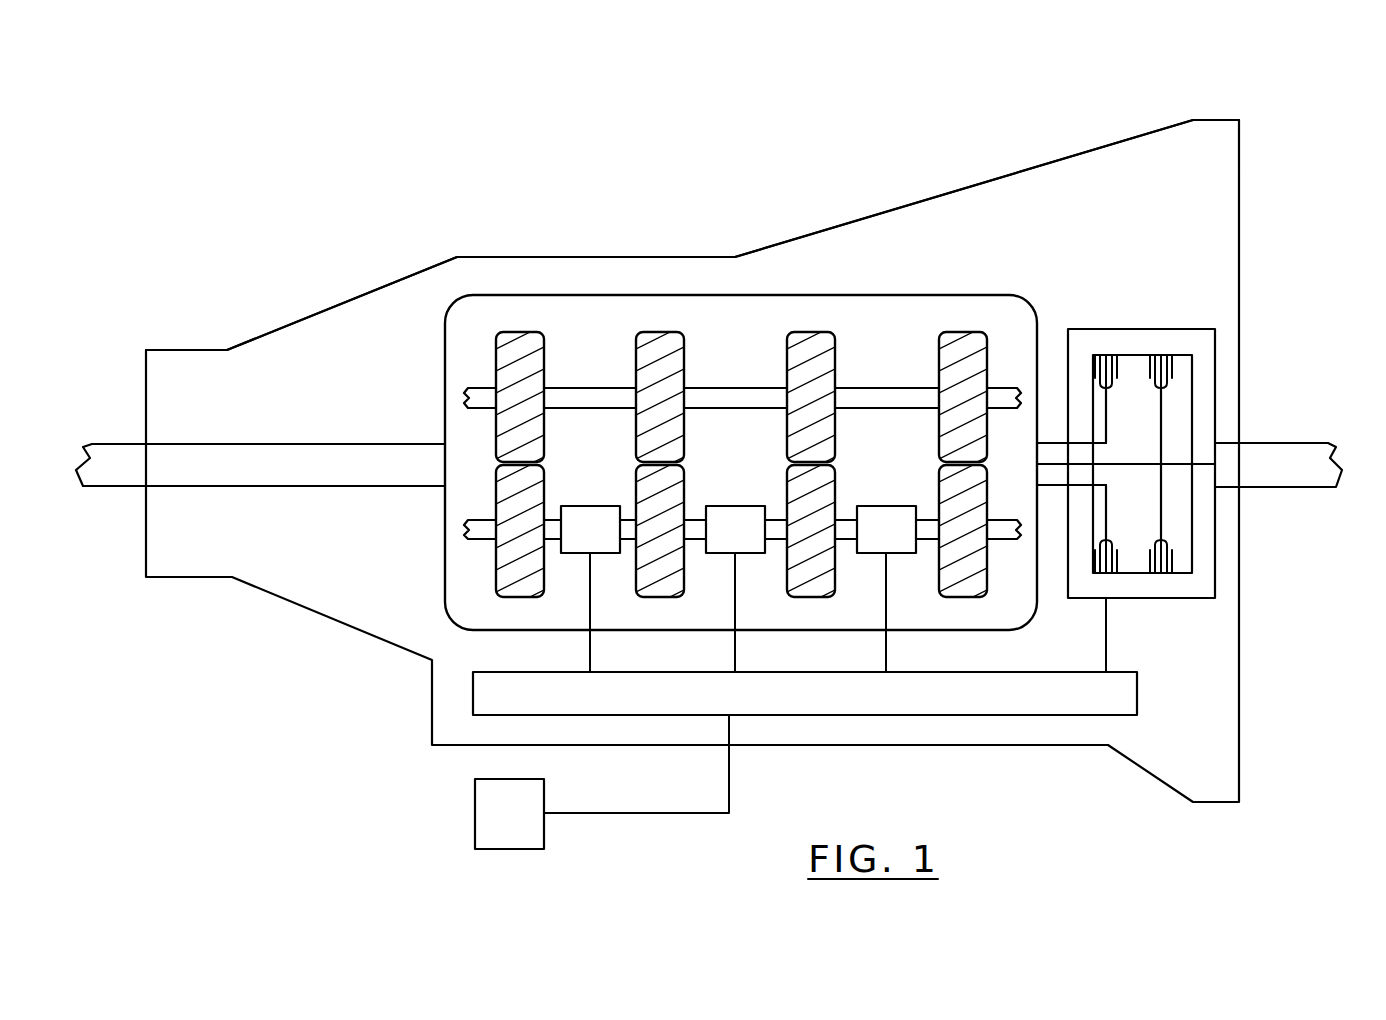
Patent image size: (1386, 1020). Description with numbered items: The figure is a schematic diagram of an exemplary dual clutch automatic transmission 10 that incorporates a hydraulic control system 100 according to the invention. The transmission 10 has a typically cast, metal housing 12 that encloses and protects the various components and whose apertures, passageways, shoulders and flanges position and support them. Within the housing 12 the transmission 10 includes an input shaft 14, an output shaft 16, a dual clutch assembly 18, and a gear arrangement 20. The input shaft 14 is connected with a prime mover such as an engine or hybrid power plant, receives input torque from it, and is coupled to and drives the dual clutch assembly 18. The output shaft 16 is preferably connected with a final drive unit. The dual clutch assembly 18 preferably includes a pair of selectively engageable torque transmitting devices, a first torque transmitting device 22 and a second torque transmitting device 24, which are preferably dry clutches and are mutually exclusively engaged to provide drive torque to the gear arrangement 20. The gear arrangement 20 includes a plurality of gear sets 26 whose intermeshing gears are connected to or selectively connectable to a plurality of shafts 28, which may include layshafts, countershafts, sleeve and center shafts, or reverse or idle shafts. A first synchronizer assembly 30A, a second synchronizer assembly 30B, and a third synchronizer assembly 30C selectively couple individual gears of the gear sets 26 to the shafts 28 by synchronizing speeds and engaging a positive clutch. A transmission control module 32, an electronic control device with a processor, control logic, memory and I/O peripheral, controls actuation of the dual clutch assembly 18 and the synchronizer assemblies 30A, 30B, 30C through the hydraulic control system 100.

The dual clutch automatic transmission 10 is at (1313, 112).
The housing 12 is at (527, 256).
The input shaft 14 is at (1293, 443).
The output shaft 16 is at (106, 443).
The dual clutch assembly 18 is at (1152, 329).
The gear arrangement 20 is at (497, 294).
The first torque transmitting device 22 is at (1122, 556).
The second torque transmitting device 24 is at (1177, 557).
The gear sets 26 is at (536, 331).
The shafts 28 is at (600, 388).
The first synchronizer assembly 30A is at (611, 541).
The second synchronizer assembly 30B is at (756, 541).
The third synchronizer assembly 30C is at (907, 541).
The transmission control module 32 is at (524, 827).
The hydraulic control system 100 is at (818, 704).